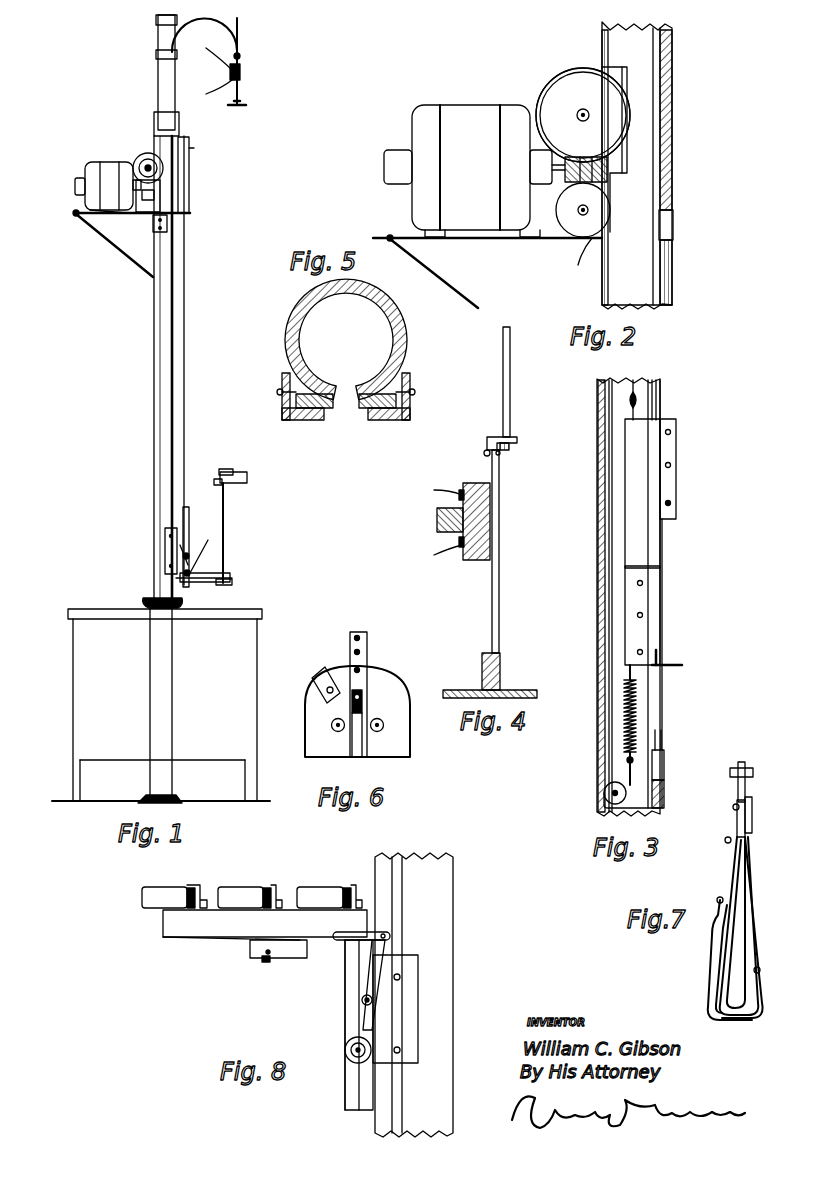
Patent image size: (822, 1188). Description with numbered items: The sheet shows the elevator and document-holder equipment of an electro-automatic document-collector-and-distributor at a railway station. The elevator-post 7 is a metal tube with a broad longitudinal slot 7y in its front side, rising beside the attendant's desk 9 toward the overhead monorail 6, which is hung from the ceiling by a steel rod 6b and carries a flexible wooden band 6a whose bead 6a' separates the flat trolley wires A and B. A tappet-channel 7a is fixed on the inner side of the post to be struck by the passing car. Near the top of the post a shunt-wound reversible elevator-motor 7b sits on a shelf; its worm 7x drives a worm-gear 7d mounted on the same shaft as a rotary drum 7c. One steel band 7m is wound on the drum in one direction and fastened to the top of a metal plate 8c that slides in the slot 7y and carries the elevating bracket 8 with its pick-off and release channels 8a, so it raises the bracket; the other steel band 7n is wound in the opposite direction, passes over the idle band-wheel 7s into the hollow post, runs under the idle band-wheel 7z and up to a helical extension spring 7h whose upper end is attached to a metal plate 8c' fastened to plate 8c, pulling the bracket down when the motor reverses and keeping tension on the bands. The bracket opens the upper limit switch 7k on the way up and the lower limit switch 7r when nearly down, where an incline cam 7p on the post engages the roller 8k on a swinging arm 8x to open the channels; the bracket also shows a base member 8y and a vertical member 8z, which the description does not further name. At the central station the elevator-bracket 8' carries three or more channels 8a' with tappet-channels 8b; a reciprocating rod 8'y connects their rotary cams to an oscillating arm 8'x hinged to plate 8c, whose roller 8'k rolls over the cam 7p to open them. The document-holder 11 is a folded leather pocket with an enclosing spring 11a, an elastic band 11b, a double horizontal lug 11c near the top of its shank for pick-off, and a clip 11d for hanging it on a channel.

In FIG. 1, the monorail 6 is at (240, 86).
In FIG. 4, the monorail 6 is at (500, 588).
In FIG. 1, the flexible wooden band 6a is at (213, 70).
In FIG. 4, the flexible wooden band 6a is at (482, 524).
In FIG. 4, the bead 6a' is at (431, 518).
In FIG. 1, the steel rod 6b is at (240, 25).
In FIG. 4, the steel rod 6b is at (512, 402).
In FIG. 1, the elevator-post 7 is at (185, 352).
In FIG. 5, the elevator-post 7 is at (405, 340).
In FIG. 1, the tappet-channel 7a is at (192, 150).
In FIG. 1, the elevator-motor 7b is at (113, 162).
In FIG. 2, the elevator-motor 7b is at (447, 104).
In FIG. 2, the rotary drum 7c is at (560, 85).
In FIG. 2, the worm-gear 7d is at (578, 68).
In FIG. 2, the worm 7x is at (608, 150).
In FIG. 2, the steel band 7m is at (626, 170).
In FIG. 3, the steel band 7m is at (630, 382).
In FIG. 2, the upper limit switch 7k is at (673, 228).
In FIG. 2, the idle band-wheel 7s is at (560, 230).
In FIG. 2, the steel band 7n is at (612, 292).
In FIG. 3, the steel band 7n is at (603, 596).
In FIG. 1, the incline cam 7p is at (165, 556).
In FIG. 8, the incline cam 7p is at (418, 1000).
In FIG. 3, the helical extension spring 7h is at (636, 712).
In FIG. 3, the lower limit switch 7r is at (666, 760).
In FIG. 3, the idle band-wheel 7z is at (625, 792).
In FIG. 5, the slot 7y is at (345, 405).
In FIG. 1, the elevating bracket 8 is at (201, 549).
In FIG. 8, the elevator-bracket 8' is at (265, 943).
In FIG. 1, the pick-off and release channel 8a is at (245, 464).
In FIG. 8, the pick-off and release channel 8a is at (306, 908).
In FIG. 8, the pick-off and release channel 8a' is at (149, 894).
In FIG. 1, the tappet-channel 8b is at (217, 480).
In FIG. 8, the tappet-channel 8b is at (218, 900).
In FIG. 1, the metal plate 8c is at (201, 542).
In FIG. 3, the metal plate 8c is at (678, 613).
In FIG. 8, the metal plate 8c is at (329, 1025).
In FIG. 3, the metal plate 8c' is at (672, 615).
In FIG. 1, the swinging arm 8x is at (183, 556).
In FIG. 8, the oscillating arm 8'x is at (388, 981).
In FIG. 1, the roller 8k is at (185, 576).
In FIG. 8, the roller 8'k is at (417, 1040).
In FIG. 1, the base bar 8y is at (206, 583).
In FIG. 8, the reciprocating rod 8'y is at (322, 1025).
In FIG. 1, the vertical rod 8z is at (228, 538).
In FIG. 1, the attendant's desk 9 is at (255, 650).
In FIG. 6, the document-holder 11 is at (388, 668).
In FIG. 7, the document-holder 11 is at (746, 862).
In FIG. 6, the enclosing spring 11a is at (345, 757).
In FIG. 7, the enclosing spring 11a is at (710, 965).
In FIG. 6, the elastic band 11b is at (318, 675).
In FIG. 6, the double horizontal lug 11c is at (364, 633).
In FIG. 7, the double horizontal lug 11c is at (748, 770).
In FIG. 7, the clip 11d is at (752, 810).